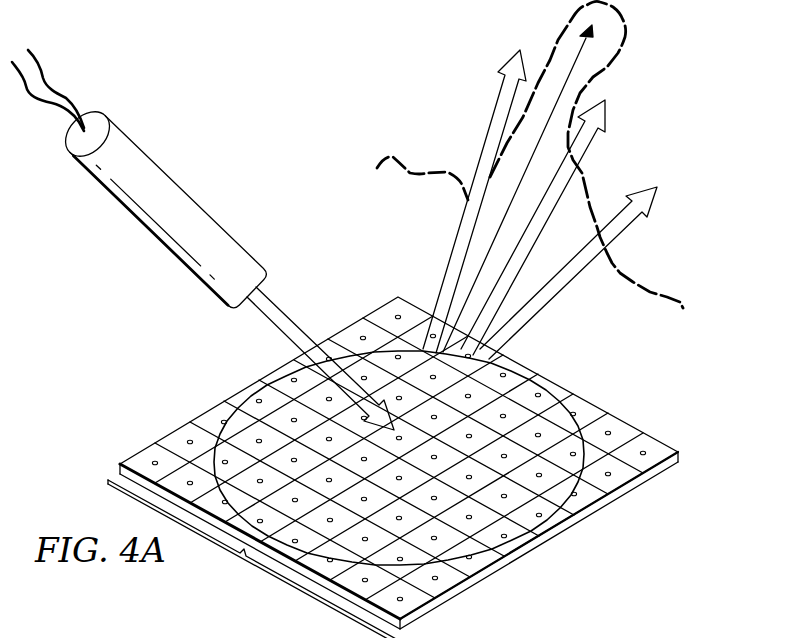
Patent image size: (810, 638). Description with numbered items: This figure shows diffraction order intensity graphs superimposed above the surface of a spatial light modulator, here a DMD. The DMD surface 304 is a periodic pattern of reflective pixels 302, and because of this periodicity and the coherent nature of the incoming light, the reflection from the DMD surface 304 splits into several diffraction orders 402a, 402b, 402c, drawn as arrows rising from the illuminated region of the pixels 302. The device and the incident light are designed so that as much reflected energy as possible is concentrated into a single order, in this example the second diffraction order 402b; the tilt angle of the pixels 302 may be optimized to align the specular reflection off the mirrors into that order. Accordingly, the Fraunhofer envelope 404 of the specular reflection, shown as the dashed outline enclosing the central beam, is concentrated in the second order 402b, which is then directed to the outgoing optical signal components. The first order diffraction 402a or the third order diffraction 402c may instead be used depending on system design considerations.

The reflective pixels 302 is at (393, 467).
The DMD surface 304 is at (655, 445).
The first order diffraction 402a is at (493, 103).
The second diffraction order 402b is at (607, 138).
The third order diffraction 402c is at (632, 236).
The Fraunhofer envelope 404 is at (627, 37).